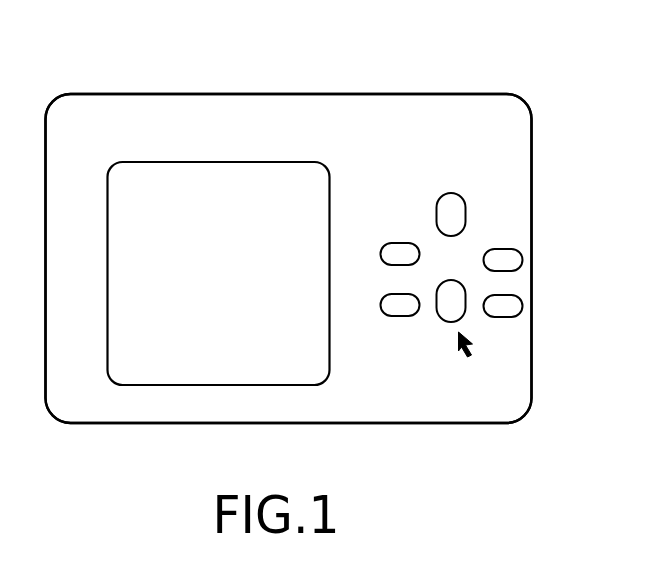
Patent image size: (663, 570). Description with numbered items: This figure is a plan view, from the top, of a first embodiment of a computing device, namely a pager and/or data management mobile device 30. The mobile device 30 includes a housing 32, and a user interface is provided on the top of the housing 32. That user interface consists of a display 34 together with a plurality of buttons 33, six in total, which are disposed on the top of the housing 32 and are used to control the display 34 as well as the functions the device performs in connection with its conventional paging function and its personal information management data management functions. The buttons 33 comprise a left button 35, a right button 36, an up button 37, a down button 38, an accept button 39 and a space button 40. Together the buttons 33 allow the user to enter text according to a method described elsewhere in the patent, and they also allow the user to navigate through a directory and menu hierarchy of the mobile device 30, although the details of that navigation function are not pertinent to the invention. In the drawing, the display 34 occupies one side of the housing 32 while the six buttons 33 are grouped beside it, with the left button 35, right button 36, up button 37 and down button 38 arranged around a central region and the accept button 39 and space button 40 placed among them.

The handheld device 30 is at (527, 440).
The housing 32 is at (532, 160).
The cursor 33 is at (473, 358).
The display screen 34 is at (217, 162).
The button 35 is at (391, 243).
The button 36 is at (523, 262).
The button 37 is at (453, 193).
The button 38 is at (437, 305).
The button 39 is at (505, 317).
The button 40 is at (385, 316).